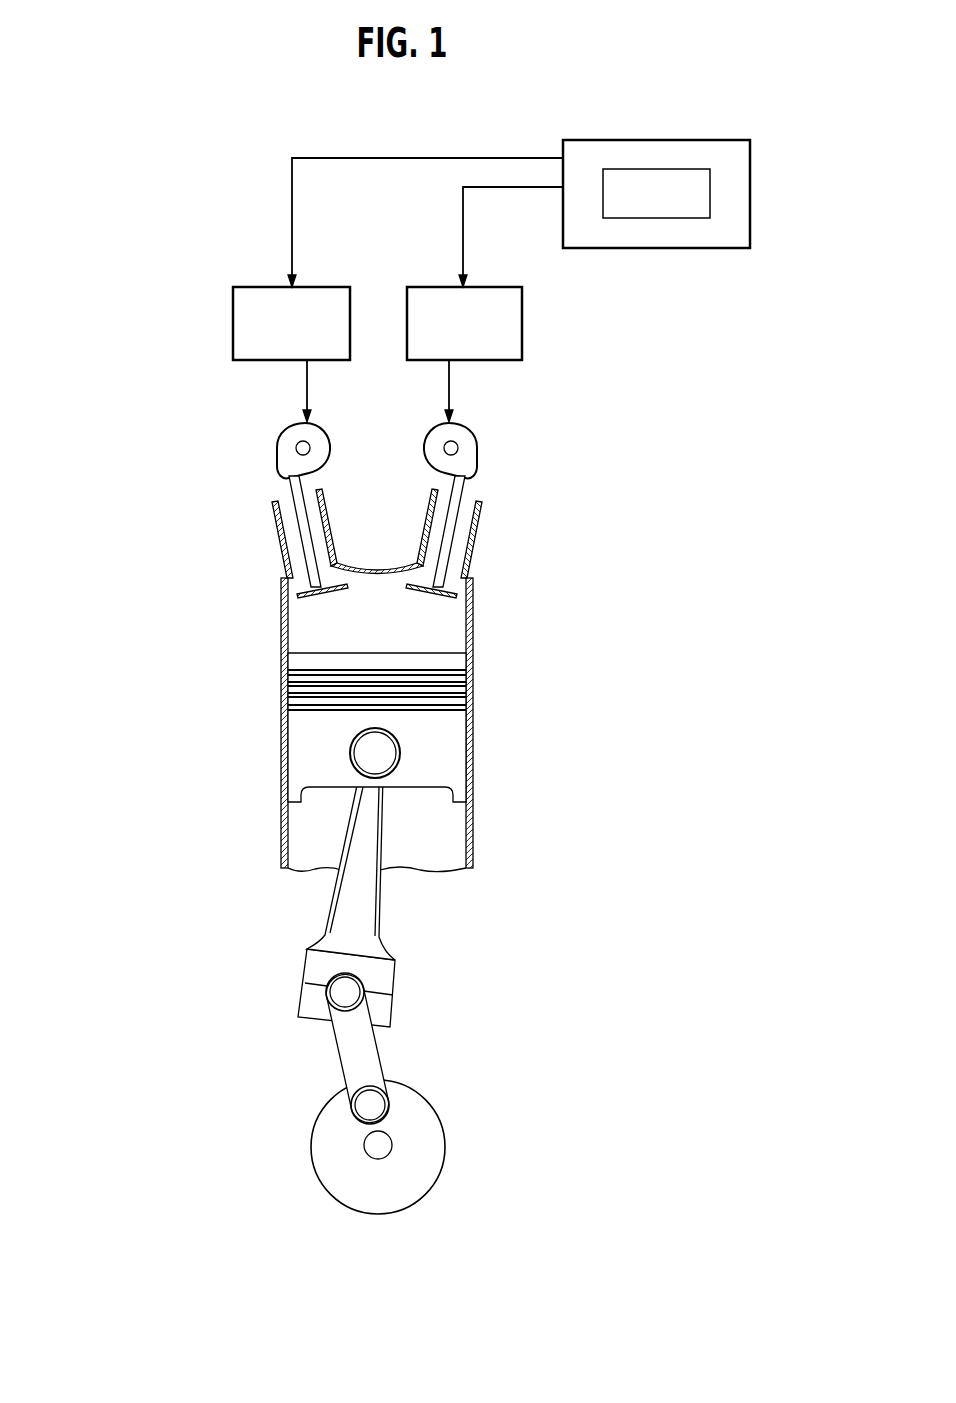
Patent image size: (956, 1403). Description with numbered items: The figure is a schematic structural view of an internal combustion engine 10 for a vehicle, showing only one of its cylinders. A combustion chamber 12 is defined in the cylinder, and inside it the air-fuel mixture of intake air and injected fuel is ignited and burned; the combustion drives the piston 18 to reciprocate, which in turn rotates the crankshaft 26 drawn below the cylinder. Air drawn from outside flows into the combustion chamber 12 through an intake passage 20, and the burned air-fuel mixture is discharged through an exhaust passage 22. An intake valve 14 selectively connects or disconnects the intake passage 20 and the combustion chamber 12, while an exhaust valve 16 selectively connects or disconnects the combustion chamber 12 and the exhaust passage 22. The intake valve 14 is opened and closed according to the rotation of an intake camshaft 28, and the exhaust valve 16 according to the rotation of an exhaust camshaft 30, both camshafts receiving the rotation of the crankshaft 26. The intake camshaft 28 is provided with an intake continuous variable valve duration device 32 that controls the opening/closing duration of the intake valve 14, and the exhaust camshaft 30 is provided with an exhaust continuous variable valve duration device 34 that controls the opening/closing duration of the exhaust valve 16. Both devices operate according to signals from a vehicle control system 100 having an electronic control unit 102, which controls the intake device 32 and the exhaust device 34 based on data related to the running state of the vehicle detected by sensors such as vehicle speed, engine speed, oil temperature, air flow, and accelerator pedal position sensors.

The internal combustion engine 10 is at (179, 208).
The combustion chamber 12 is at (457, 628).
The intake valve 14 is at (310, 547).
The exhaust valve 16 is at (445, 547).
The piston 18 is at (457, 742).
The intake passage 20 is at (284, 525).
The exhaust passage 22 is at (462, 520).
The crankshaft 26 is at (423, 1134).
The intake camshaft 28 is at (277, 449).
The exhaust camshaft 30 is at (478, 452).
The intake continuous variable valve duration (CVVD) device 32 is at (236, 300).
The exhaust continuous variable valve duration (CVVD) device 34 is at (518, 297).
The vehicle control system 100 is at (697, 140).
The electronic control unit (ECU) 102 is at (692, 210).